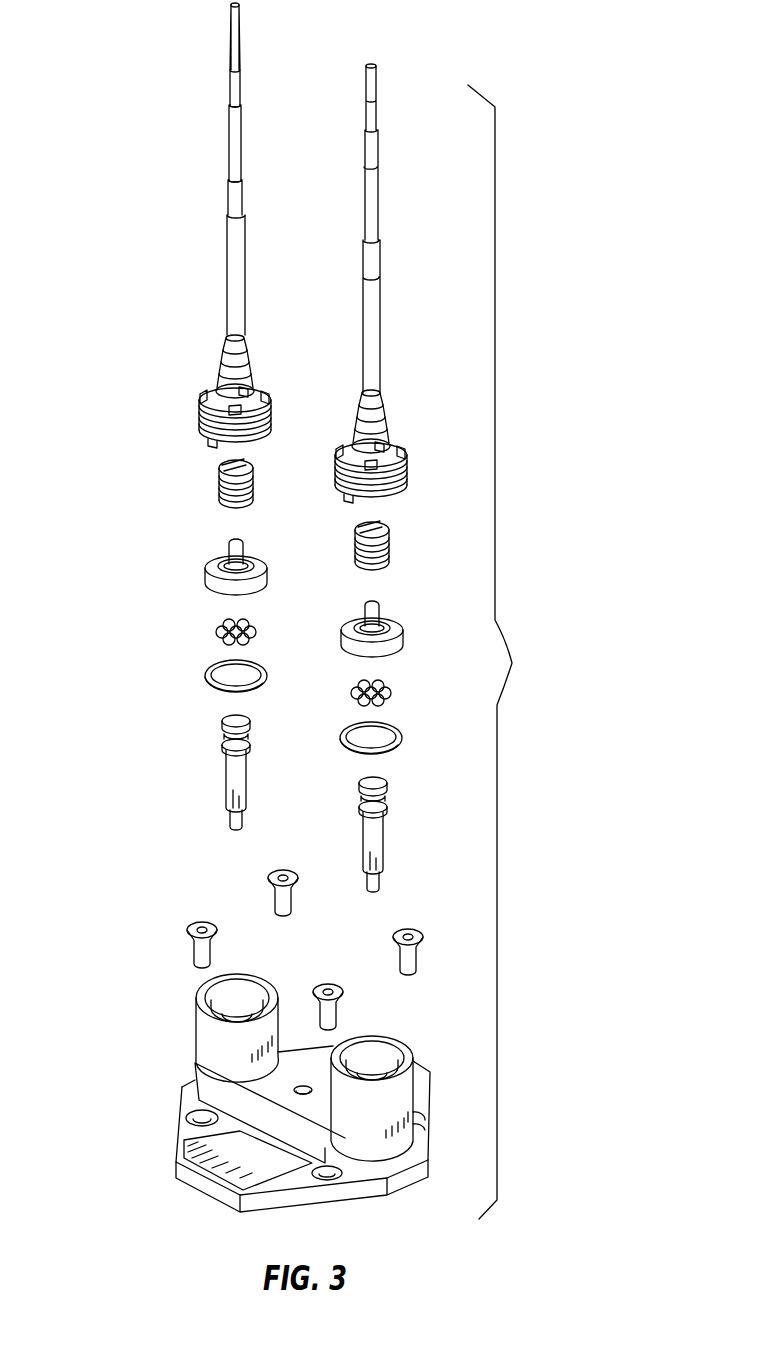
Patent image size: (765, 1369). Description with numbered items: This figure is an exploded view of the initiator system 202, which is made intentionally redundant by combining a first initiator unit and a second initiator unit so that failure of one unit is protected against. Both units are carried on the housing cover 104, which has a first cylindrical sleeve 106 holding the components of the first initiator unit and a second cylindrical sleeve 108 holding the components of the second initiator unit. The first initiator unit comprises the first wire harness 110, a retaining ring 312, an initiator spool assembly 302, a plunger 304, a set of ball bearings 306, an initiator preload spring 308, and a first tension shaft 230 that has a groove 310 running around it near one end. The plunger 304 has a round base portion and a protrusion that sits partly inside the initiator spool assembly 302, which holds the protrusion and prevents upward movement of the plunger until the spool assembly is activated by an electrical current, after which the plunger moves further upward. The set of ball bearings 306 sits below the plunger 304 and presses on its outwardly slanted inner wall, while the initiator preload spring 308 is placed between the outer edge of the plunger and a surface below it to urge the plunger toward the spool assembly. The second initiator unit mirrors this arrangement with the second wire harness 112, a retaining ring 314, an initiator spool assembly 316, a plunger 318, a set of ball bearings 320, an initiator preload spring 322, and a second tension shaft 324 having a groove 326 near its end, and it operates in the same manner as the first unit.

The initiator system 202 is at (498, 60).
The second wire harness 112 is at (228, 200).
The first wire harness 110 is at (378, 206).
The retaining ring 314 is at (206, 393).
The retaining ring 312 is at (405, 443).
The initiator spool assembly 316 is at (220, 494).
The initiator spool assembly 302 is at (392, 556).
The plunger 318 is at (206, 571).
The plunger 304 is at (404, 633).
The set of ball bearings 320 is at (218, 637).
The set of ball bearings 306 is at (395, 692).
The initiator preload spring 322 is at (206, 678).
The initiator preload spring 308 is at (405, 744).
The groove 326 is at (222, 736).
The second tension shaft 324 is at (228, 800).
The groove 310 is at (389, 793).
The first tension shaft 230 is at (388, 861).
The second cylindrical sleeve 108 is at (207, 1043).
The first cylindrical sleeve 106 is at (425, 1088).
The housing cover 104 is at (197, 1148).